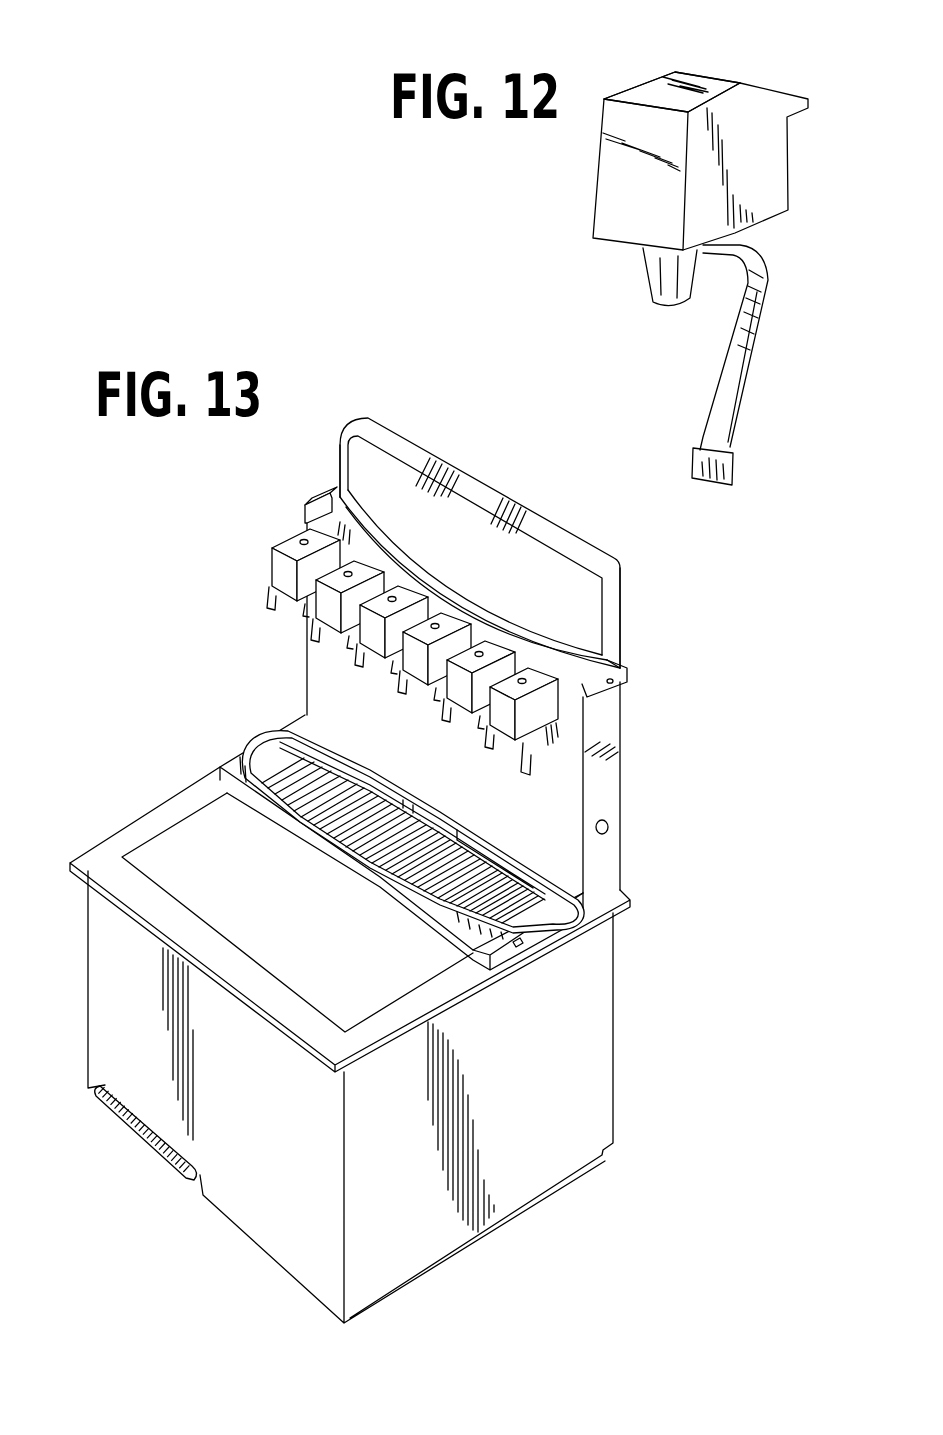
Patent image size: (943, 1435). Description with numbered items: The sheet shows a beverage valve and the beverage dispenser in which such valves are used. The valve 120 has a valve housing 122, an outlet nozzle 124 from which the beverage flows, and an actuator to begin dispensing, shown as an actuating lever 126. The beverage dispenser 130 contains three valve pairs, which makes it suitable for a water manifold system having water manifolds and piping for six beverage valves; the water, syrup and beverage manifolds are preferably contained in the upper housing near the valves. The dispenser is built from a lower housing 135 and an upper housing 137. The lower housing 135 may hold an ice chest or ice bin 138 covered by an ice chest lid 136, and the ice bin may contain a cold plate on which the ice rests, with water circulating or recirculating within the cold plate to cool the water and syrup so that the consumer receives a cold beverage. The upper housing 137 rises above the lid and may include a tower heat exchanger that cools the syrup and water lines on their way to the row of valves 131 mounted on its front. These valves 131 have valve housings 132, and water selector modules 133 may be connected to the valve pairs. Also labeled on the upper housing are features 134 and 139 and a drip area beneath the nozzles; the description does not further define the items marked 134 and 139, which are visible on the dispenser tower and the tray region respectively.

In FIG. 12, the valve 120 is at (778, 90).
In FIG. 12, the valve housing 122 is at (677, 78).
In FIG. 12, the outlet nozzle 124 is at (658, 306).
In FIG. 12, the actuating lever 126 is at (747, 390).
In FIG. 13, the beverage dispenser 130 is at (190, 663).
In FIG. 13, the valves 131 is at (272, 577).
In FIG. 13, the valve housings 132 is at (277, 562).
In FIG. 13, the water selector modules 133 is at (567, 710).
In FIG. 13, the dispensing tower 134 is at (643, 747).
In FIG. 13, the lower housing 135 is at (608, 938).
In FIG. 13, the ice chest lid 136 is at (300, 912).
In FIG. 13, the upper housing 137 is at (620, 807).
In FIG. 13, the ice chest or ice bin 138 is at (128, 1003).
In FIG. 13, the drip tray grille 139 is at (283, 763).